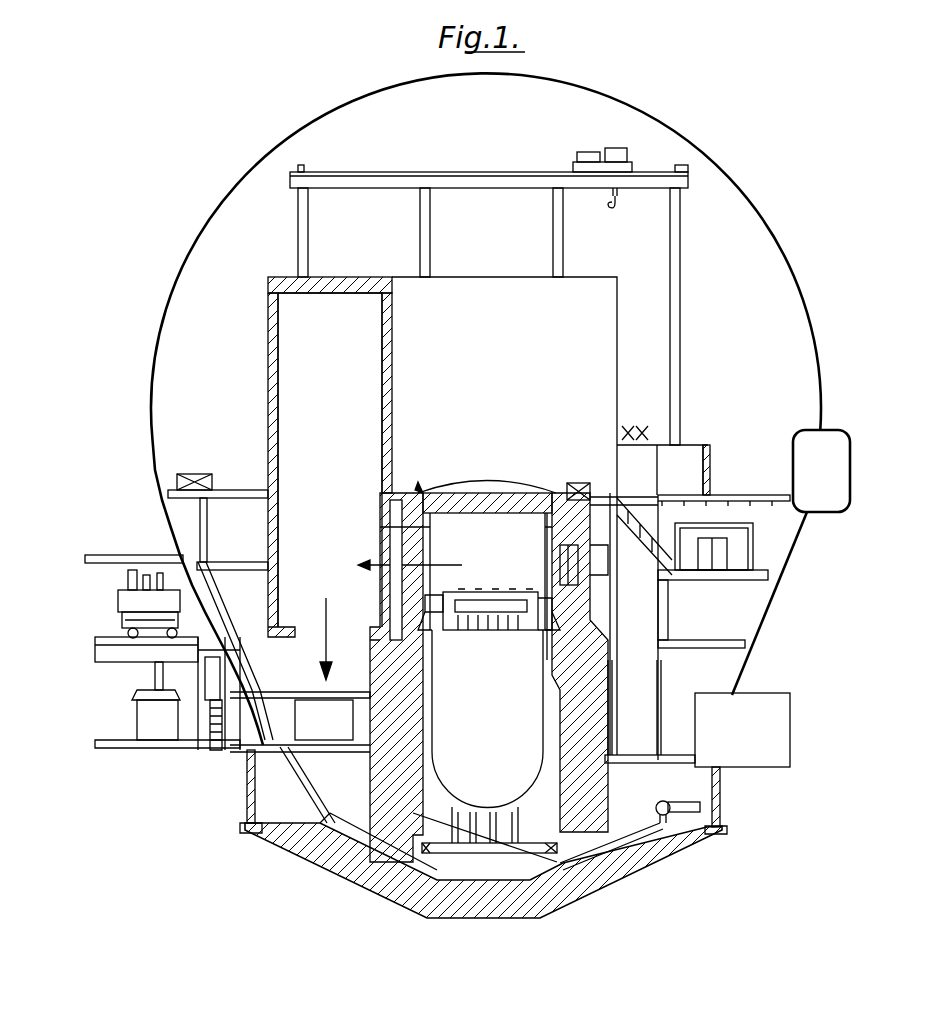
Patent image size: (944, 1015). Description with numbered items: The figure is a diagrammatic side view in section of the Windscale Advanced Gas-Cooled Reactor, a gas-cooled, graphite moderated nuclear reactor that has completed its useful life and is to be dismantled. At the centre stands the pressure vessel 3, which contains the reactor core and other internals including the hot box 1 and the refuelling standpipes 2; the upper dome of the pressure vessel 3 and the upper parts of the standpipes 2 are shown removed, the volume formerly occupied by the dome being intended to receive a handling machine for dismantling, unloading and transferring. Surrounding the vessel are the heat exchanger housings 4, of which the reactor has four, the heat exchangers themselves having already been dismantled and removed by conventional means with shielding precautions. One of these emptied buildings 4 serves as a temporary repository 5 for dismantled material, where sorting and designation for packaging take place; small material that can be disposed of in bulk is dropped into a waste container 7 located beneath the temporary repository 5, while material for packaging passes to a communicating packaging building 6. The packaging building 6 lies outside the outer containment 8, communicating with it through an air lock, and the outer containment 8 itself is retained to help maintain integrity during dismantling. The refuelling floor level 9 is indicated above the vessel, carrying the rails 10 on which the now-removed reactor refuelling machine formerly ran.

The hot box 1 is at (548, 612).
The refuelling standpipes 2 is at (500, 635).
The pressure vessel 3 is at (512, 744).
The heat exchanger housings 4 is at (272, 343).
The temporary repository 5 is at (375, 343).
The packaging building 6 is at (100, 609).
The waste container 7 is at (340, 722).
The outer containment 8 is at (212, 222).
The refuelling floor level 9 is at (418, 490).
The rails 10 is at (462, 481).